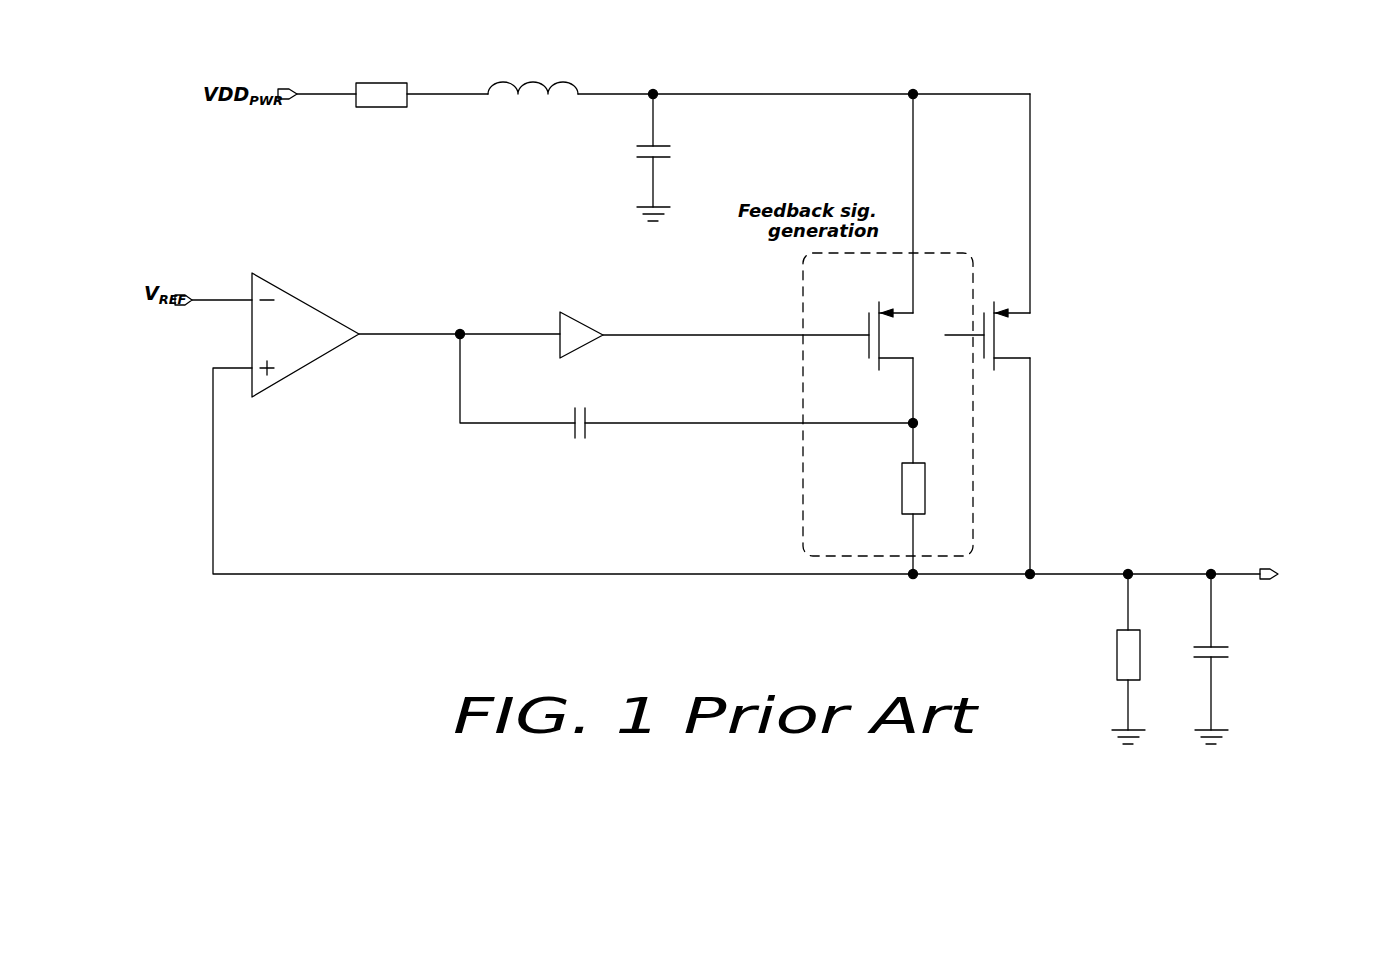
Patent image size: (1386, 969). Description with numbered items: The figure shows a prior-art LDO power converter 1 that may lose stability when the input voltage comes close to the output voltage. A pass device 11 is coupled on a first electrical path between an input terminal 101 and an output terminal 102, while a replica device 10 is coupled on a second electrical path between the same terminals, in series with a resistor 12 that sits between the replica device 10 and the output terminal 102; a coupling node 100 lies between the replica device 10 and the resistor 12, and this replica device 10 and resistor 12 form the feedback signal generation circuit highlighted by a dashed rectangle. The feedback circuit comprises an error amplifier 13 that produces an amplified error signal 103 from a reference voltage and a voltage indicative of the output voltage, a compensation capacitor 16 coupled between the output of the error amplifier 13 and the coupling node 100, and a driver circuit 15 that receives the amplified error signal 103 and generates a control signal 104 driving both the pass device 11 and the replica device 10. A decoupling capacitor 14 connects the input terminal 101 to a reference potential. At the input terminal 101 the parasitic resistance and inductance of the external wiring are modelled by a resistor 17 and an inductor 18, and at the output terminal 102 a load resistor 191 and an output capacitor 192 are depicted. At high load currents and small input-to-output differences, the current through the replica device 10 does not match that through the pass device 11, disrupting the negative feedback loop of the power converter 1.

The power converter 1 is at (1070, 193).
The replica device 10 is at (912, 326).
The pass device 11 is at (1030, 326).
The resistor 12 is at (925, 480).
The error amplifier 13 is at (297, 370).
The decoupling capacitor 14 is at (658, 162).
The driver circuit 15 is at (580, 352).
The compensation capacitor 16 is at (593, 433).
The resistor 17 is at (412, 82).
The inductor 18 is at (565, 82).
The coupling node 100 is at (911, 421).
The input terminal 101 is at (910, 82).
The output terminal 102 is at (1267, 567).
The amplified error signal 103 is at (458, 322).
The control signal 104 is at (757, 333).
The load resistor 191 is at (1117, 668).
The output capacitor 192 is at (1233, 655).